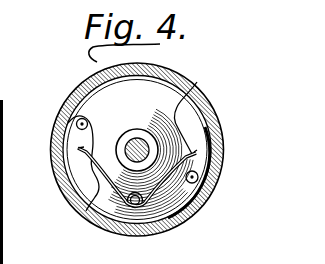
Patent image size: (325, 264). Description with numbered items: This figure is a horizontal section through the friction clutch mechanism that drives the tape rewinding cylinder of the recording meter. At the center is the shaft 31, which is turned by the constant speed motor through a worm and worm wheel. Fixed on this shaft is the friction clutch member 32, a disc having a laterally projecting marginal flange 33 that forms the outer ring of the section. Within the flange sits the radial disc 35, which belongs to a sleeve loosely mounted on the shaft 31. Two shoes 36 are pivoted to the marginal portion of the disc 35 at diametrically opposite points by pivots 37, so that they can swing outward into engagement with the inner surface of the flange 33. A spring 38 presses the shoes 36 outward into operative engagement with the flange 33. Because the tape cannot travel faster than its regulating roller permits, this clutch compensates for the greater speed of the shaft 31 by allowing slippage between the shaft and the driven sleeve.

The shaft 31 is at (137, 148).
The fixed friction clutch member 32 is at (199, 180).
The marginal flange 33 is at (222, 152).
The radial disc 35 is at (168, 92).
The shoes 36 is at (187, 108).
The pivots 37 is at (76, 121).
The spring 38 is at (148, 180).